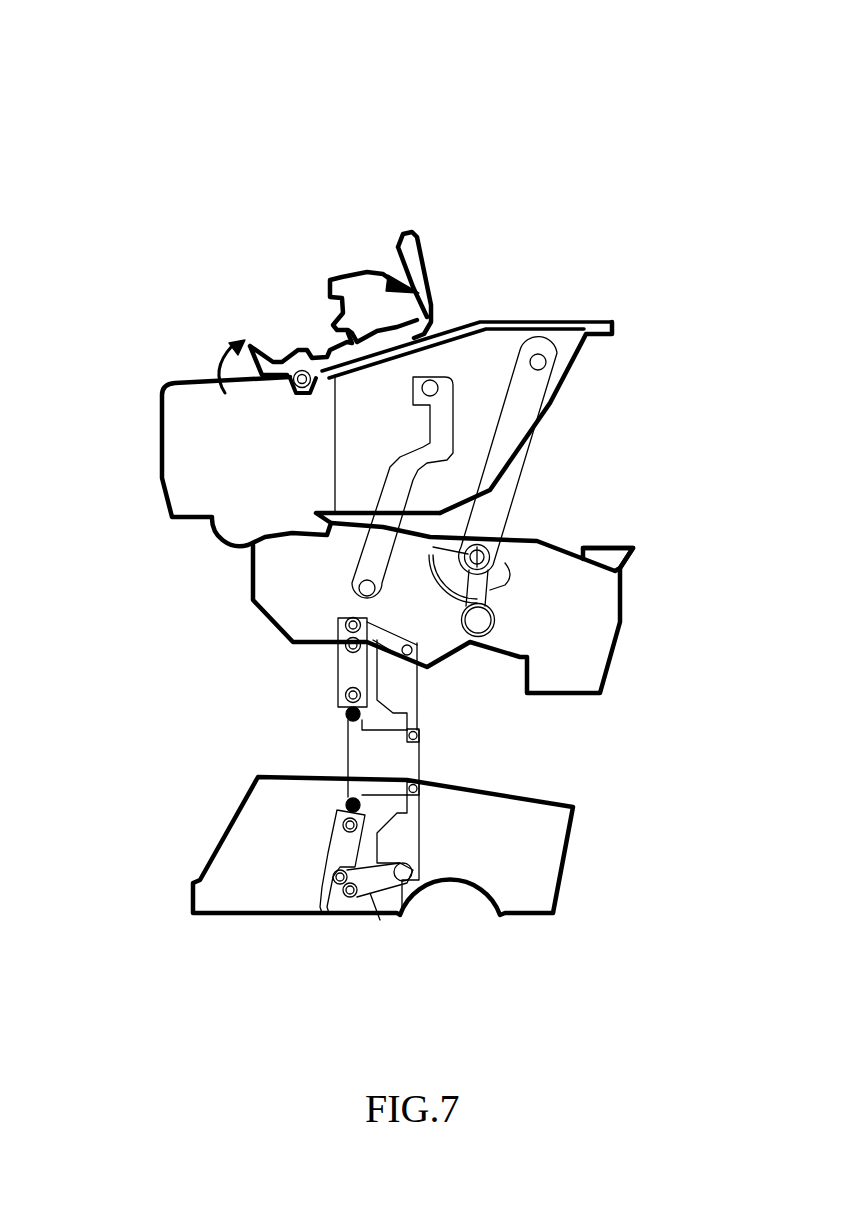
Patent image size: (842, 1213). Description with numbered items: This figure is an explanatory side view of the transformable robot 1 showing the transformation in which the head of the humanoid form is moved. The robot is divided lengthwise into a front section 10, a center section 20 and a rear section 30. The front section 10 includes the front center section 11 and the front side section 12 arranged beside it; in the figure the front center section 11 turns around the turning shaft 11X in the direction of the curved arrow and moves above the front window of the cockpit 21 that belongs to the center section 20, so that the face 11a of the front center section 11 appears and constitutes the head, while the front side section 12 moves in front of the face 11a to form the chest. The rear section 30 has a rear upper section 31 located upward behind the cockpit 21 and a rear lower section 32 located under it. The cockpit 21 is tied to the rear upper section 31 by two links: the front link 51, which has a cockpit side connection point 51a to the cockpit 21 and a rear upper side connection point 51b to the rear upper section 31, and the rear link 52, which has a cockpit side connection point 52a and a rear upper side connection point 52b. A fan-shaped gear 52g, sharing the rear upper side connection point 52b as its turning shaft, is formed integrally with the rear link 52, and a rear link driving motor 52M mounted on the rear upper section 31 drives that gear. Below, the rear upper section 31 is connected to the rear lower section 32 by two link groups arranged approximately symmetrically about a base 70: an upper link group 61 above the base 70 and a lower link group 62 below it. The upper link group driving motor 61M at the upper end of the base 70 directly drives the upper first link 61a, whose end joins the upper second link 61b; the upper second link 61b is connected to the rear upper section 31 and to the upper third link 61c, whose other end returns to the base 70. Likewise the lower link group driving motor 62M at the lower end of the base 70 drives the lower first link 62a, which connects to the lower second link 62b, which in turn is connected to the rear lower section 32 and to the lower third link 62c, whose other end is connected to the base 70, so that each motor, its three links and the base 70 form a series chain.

The transformable robot 1 is at (103, 85).
The front section 10 is at (183, 305).
The front center section 11 is at (395, 230).
The face 11a is at (352, 312).
The turning shaft 11X is at (298, 370).
The front side section 12 is at (213, 458).
The center section 20 is at (458, 215).
The cockpit 21 is at (530, 320).
The rear section 30 is at (680, 645).
The rear upper section 31 is at (590, 610).
The rear lower section 32 is at (547, 887).
The front link 51 is at (380, 502).
The cockpit side connection point 51a is at (417, 393).
The rear upper side connection point 51b is at (363, 590).
The rear link 52 is at (532, 468).
The cockpit side connection point 52a is at (540, 365).
The rear upper side connection point 52b is at (480, 547).
The fan-shaped gear 52g is at (473, 580).
The rear link driving motor 52M is at (492, 620).
The upper link group 61 is at (310, 678).
The upper first link 61a is at (343, 663).
The upper second link 61b is at (378, 640).
The upper third link 61c is at (400, 693).
The upper link group driving motor 61M is at (348, 715).
The lower link group 62 is at (250, 820).
The lower first link 62a is at (343, 857).
The lower second link 62b is at (378, 915).
The lower third link 62c is at (407, 848).
The lower link group driving motor 62M is at (347, 803).
The base 70 is at (360, 765).